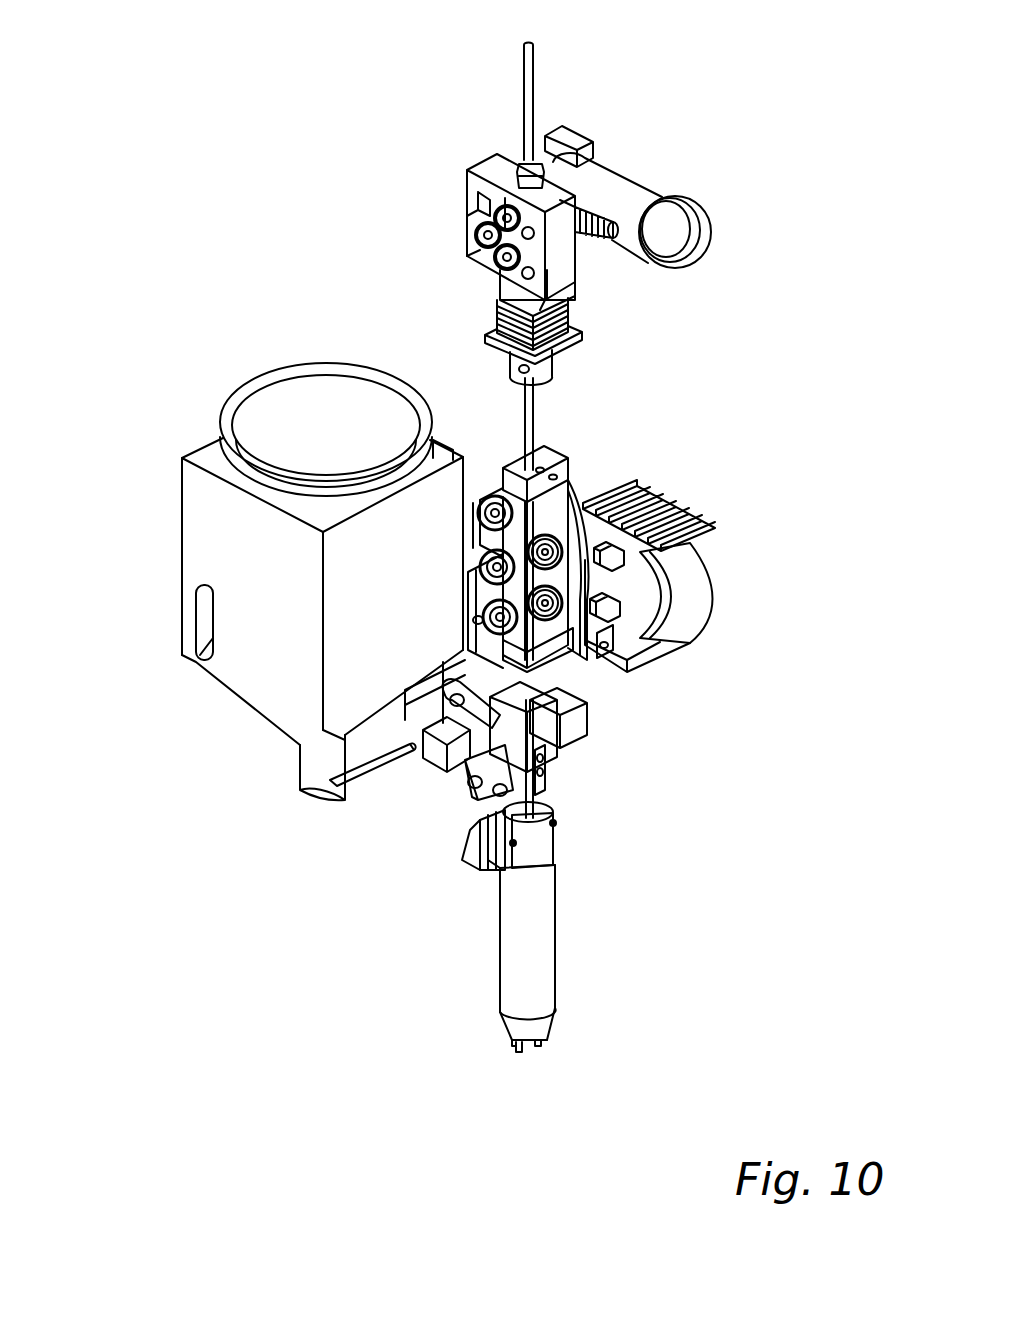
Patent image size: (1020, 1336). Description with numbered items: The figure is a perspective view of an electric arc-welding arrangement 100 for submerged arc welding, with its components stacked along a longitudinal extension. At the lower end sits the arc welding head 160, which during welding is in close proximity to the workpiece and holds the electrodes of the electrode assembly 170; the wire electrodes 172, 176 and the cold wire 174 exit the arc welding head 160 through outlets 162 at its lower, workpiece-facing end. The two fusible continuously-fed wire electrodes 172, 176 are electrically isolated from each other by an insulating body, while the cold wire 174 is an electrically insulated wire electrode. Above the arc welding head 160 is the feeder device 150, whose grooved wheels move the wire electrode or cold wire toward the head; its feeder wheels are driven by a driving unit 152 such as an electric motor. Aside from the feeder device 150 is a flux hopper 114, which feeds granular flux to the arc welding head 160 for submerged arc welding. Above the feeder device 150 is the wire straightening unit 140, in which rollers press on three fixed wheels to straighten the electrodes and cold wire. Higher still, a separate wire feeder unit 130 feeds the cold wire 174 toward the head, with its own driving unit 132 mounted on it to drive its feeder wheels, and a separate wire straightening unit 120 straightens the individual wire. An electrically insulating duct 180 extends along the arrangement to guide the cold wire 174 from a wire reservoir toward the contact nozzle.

The electric arc-welding arrangement 100 is at (288, 154).
The flux hopper 114 is at (193, 518).
The wire straightening unit 120 is at (516, 153).
The wire feeder unit 130 is at (466, 219).
The driving unit 132 is at (633, 188).
The wire straightening unit 140 is at (568, 518).
The feeder device 150 is at (606, 698).
The driving unit 152 is at (685, 578).
The arc welding head 160 is at (556, 905).
The outlets 162 is at (512, 1025).
The electrode assembly 170 is at (552, 1041).
The wire electrode 172 is at (540, 1050).
The cold wire 174 is at (522, 1054).
The wire electrode 176 is at (513, 1050).
The electrically insulating duct 180 is at (532, 86).